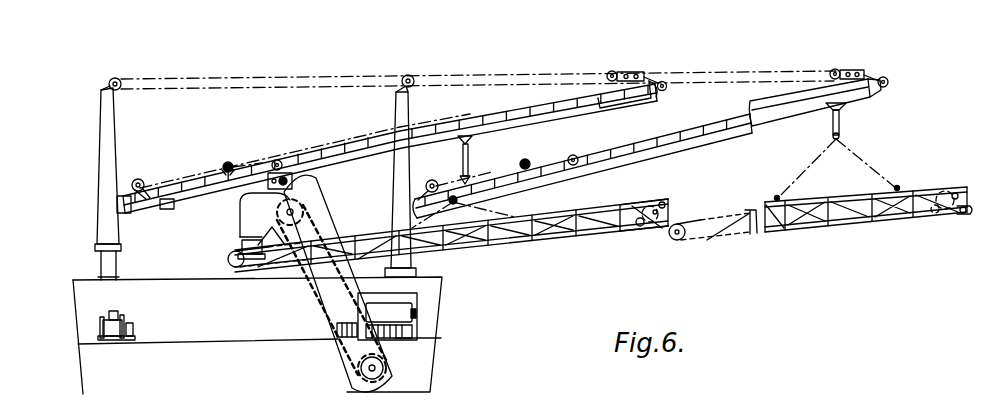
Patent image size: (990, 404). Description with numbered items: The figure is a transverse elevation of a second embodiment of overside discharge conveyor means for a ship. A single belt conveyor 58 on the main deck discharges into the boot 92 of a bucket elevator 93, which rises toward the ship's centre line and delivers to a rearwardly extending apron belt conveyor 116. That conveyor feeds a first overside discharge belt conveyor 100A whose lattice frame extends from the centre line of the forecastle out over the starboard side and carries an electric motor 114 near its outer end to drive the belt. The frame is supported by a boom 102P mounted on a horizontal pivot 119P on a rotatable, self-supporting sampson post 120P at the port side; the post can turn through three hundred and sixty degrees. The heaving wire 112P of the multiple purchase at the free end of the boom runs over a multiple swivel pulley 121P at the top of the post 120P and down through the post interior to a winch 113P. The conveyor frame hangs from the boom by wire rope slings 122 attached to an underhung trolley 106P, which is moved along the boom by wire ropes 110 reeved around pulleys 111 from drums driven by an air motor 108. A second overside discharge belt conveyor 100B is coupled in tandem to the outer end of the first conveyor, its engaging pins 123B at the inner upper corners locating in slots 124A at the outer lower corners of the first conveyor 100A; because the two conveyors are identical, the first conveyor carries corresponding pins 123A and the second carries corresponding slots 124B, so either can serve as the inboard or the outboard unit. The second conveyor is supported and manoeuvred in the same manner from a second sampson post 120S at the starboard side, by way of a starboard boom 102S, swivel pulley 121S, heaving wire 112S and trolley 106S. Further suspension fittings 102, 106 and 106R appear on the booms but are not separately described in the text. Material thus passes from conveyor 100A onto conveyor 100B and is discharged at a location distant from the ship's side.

The belt conveyor 58 is at (418, 315).
The boot 92 is at (418, 355).
The bucket elevator 93 is at (300, 230).
The first overside discharge belt conveyor 100A is at (471, 257).
The second overside discharge belt conveyor 100B is at (860, 230).
The pulley block 102 is at (434, 180).
The boom 102P is at (318, 149).
The starboard boom 102S is at (698, 126).
The hanger bracket 106 is at (842, 110).
The underhung trolley 106P is at (612, 71).
The rear hanger 106R is at (475, 140).
The starboard trolley 106S is at (835, 69).
The air motor 108 is at (142, 179).
The wire ropes 110 is at (199, 171).
The pulleys 111 is at (277, 160).
The heaving wire 112P is at (288, 76).
The starboard topping cable 112S is at (751, 80).
The winch 113P is at (134, 326).
The electric motor 114 is at (243, 247).
The apron belt conveyor 116 is at (240, 232).
The horizontal pivot 119P is at (133, 210).
The sampson post 120P is at (118, 113).
The second sampson post 120S is at (410, 107).
The multiple swivel pulley 121P is at (121, 80).
The starboard mast head sheave 121S is at (412, 79).
The wire rope slings 122 is at (498, 205).
The tail roller 123A is at (229, 262).
The engaging pins 123B is at (672, 214).
The slots 124A is at (684, 226).
The end roller 124B is at (962, 218).